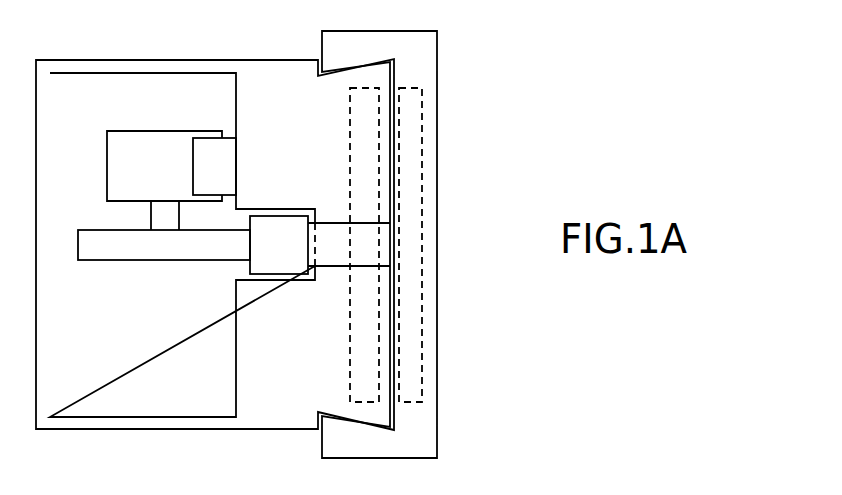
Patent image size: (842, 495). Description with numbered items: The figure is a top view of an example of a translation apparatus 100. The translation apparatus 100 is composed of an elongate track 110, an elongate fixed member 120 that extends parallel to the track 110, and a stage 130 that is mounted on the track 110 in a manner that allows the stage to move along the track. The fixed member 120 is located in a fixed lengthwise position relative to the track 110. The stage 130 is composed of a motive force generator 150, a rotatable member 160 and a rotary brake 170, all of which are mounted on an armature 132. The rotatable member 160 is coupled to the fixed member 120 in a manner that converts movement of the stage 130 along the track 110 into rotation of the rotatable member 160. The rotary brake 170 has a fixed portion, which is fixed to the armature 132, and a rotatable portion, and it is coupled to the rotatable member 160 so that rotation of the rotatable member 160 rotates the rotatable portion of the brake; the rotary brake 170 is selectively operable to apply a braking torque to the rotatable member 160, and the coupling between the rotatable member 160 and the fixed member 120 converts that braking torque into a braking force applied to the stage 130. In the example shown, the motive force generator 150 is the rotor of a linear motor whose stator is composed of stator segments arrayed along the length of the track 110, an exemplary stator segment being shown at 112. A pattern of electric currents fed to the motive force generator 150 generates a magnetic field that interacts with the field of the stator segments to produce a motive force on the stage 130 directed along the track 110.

The translation apparatus 100 is at (443, 47).
The elongate track 110 is at (430, 212).
The stator segment 112 is at (423, 242).
The elongate fixed member 120 is at (299, 260).
The stage 130 is at (105, 431).
The armature 132 is at (250, 412).
The motive force generator 150 is at (377, 88).
The rotatable member 160 is at (186, 258).
The rotary brake 170 is at (177, 180).